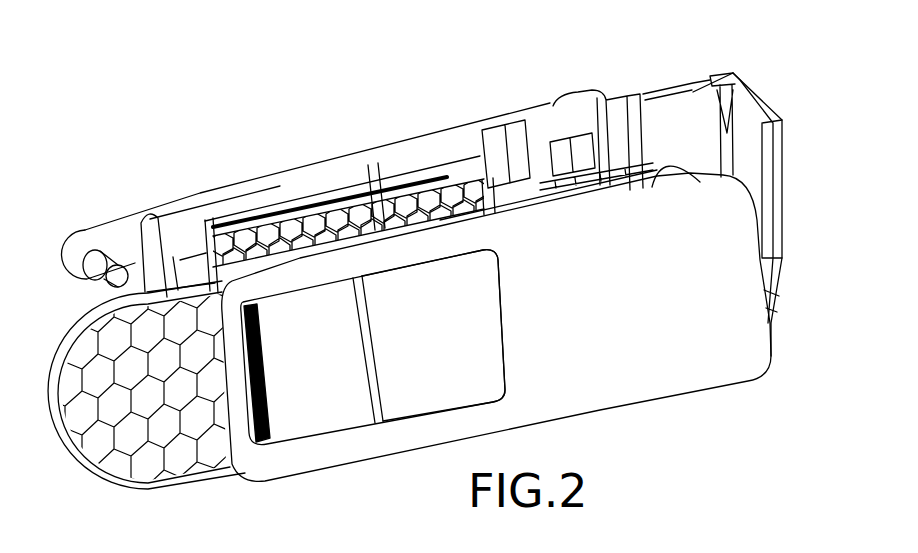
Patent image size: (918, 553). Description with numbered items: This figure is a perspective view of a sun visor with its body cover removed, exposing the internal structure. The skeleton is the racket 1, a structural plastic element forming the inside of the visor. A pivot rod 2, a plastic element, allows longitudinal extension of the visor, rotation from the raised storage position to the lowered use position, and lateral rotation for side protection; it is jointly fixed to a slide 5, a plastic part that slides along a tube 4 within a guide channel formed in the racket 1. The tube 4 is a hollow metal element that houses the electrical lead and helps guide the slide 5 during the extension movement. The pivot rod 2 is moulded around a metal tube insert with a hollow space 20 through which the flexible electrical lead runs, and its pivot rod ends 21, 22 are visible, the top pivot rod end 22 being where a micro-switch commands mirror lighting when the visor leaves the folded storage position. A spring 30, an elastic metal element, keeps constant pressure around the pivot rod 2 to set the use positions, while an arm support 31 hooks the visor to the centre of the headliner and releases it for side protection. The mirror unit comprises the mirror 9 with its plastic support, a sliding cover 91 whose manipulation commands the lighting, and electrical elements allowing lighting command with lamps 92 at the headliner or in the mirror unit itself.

The racket 1 is at (172, 468).
The pivot rod 2 is at (110, 237).
The hollow space 20 is at (128, 262).
The pivot rod end 21 is at (91, 257).
The pivot rod end 22 is at (497, 130).
The spring 30 is at (510, 157).
The arm support 31 is at (697, 90).
The tube 4 is at (440, 170).
The slide 5 is at (563, 200).
The mirror 9 is at (323, 337).
The sliding cover 91 is at (424, 330).
The lamps 92 is at (253, 307).